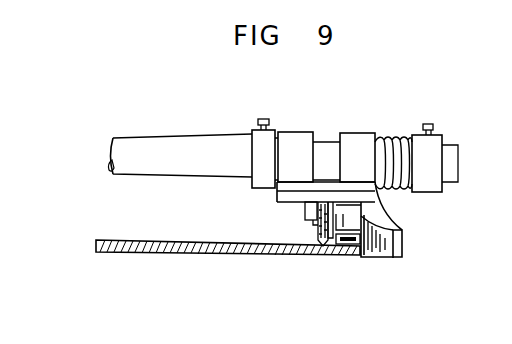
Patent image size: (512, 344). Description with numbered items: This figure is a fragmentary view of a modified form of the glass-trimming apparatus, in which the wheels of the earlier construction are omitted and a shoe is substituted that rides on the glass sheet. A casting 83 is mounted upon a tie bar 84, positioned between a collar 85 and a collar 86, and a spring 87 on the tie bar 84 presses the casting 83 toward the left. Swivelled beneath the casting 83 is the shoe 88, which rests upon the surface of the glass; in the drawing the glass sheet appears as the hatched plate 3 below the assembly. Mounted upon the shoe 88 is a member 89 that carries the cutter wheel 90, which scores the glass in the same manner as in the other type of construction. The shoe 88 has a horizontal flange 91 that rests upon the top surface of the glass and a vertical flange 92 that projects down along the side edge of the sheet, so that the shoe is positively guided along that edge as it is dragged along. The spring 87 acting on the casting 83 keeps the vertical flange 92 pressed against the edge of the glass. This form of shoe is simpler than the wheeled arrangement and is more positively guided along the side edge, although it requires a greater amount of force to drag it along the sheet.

The base plate 3 is at (133, 242).
The casting 83 is at (293, 142).
The tie bar 84 is at (150, 143).
The collar 85 is at (250, 183).
The collar 86 is at (430, 192).
The spring 87 is at (393, 138).
The shoe 88 is at (288, 198).
The member 89 is at (313, 218).
The cutter wheel 90 is at (322, 246).
The horizontal flange 91 is at (348, 246).
The vertical flange 92 is at (381, 258).